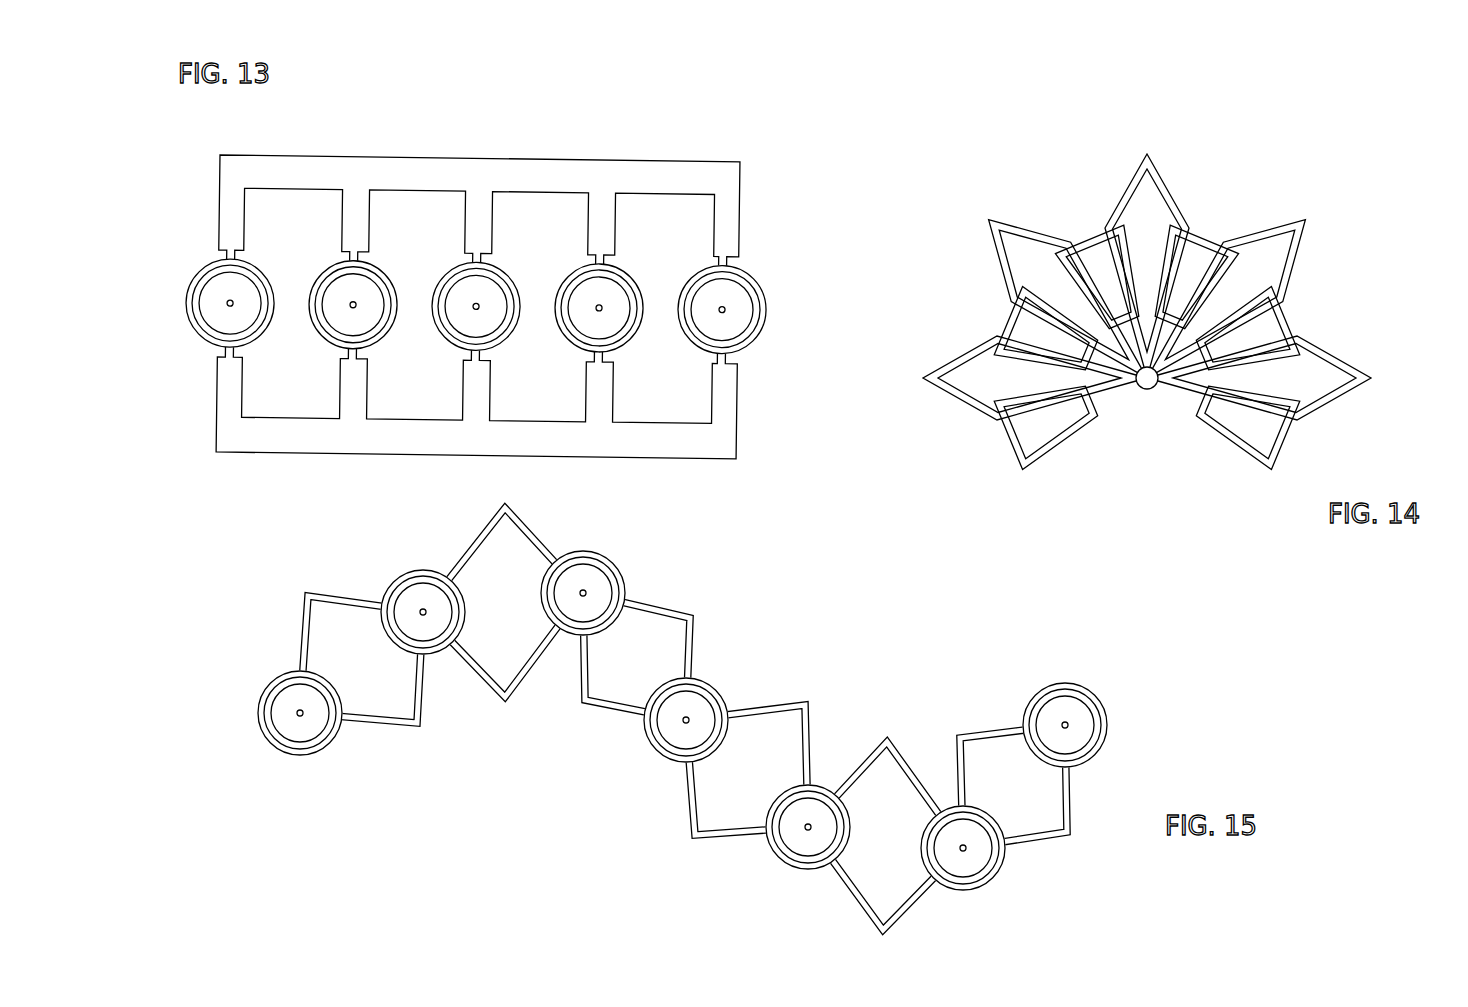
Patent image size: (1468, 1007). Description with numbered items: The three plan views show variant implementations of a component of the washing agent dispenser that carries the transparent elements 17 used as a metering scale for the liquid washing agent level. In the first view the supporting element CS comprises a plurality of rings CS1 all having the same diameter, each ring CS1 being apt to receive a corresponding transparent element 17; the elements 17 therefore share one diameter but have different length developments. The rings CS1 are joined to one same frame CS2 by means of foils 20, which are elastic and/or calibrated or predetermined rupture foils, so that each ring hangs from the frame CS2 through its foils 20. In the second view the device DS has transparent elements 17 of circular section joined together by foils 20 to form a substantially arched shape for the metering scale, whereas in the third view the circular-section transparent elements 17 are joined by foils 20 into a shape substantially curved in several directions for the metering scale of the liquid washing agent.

In FIG. 13, the transparent element 17 is at (218, 287).
In FIG. 14, the transparent element 17 is at (1012, 324).
In FIG. 15, the transparent element 17 is at (292, 724).
In FIG. 13, the foil 20 is at (229, 257).
In FIG. 14, the foil 20 is at (1125, 188).
In FIG. 15, the foil 20 is at (488, 680).
In FIG. 13, the supporting element CS is at (720, 154).
In FIG. 13, the ring CS1 is at (212, 336).
In FIG. 13, the frame CS2 is at (410, 180).
In FIG. 14, the device DS is at (1305, 150).
In FIG. 15, the device DS is at (282, 826).